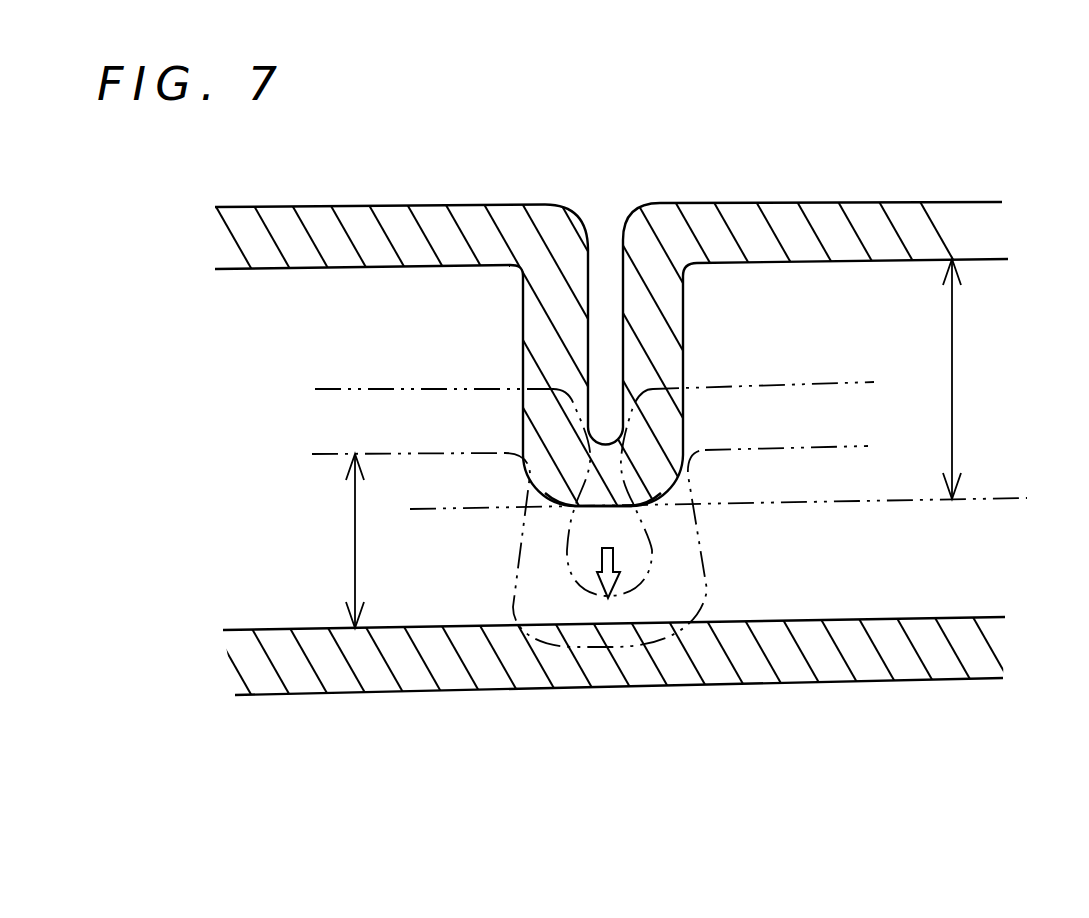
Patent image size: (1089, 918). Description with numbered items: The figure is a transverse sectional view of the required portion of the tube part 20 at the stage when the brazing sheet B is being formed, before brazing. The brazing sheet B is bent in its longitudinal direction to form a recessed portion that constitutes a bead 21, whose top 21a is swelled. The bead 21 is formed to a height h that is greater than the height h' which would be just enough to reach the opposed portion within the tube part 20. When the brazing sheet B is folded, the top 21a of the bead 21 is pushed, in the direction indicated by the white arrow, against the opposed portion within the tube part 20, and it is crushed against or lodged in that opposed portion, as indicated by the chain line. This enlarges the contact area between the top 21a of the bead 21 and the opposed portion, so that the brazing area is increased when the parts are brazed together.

The tube part 20 is at (852, 128).
The bead 21 is at (553, 343).
The top of the bead 21a is at (607, 512).
The brazing sheet B is at (168, 207).
The height of the bead h is at (1015, 379).
The height enough to reach the opposed portion h' is at (309, 541).